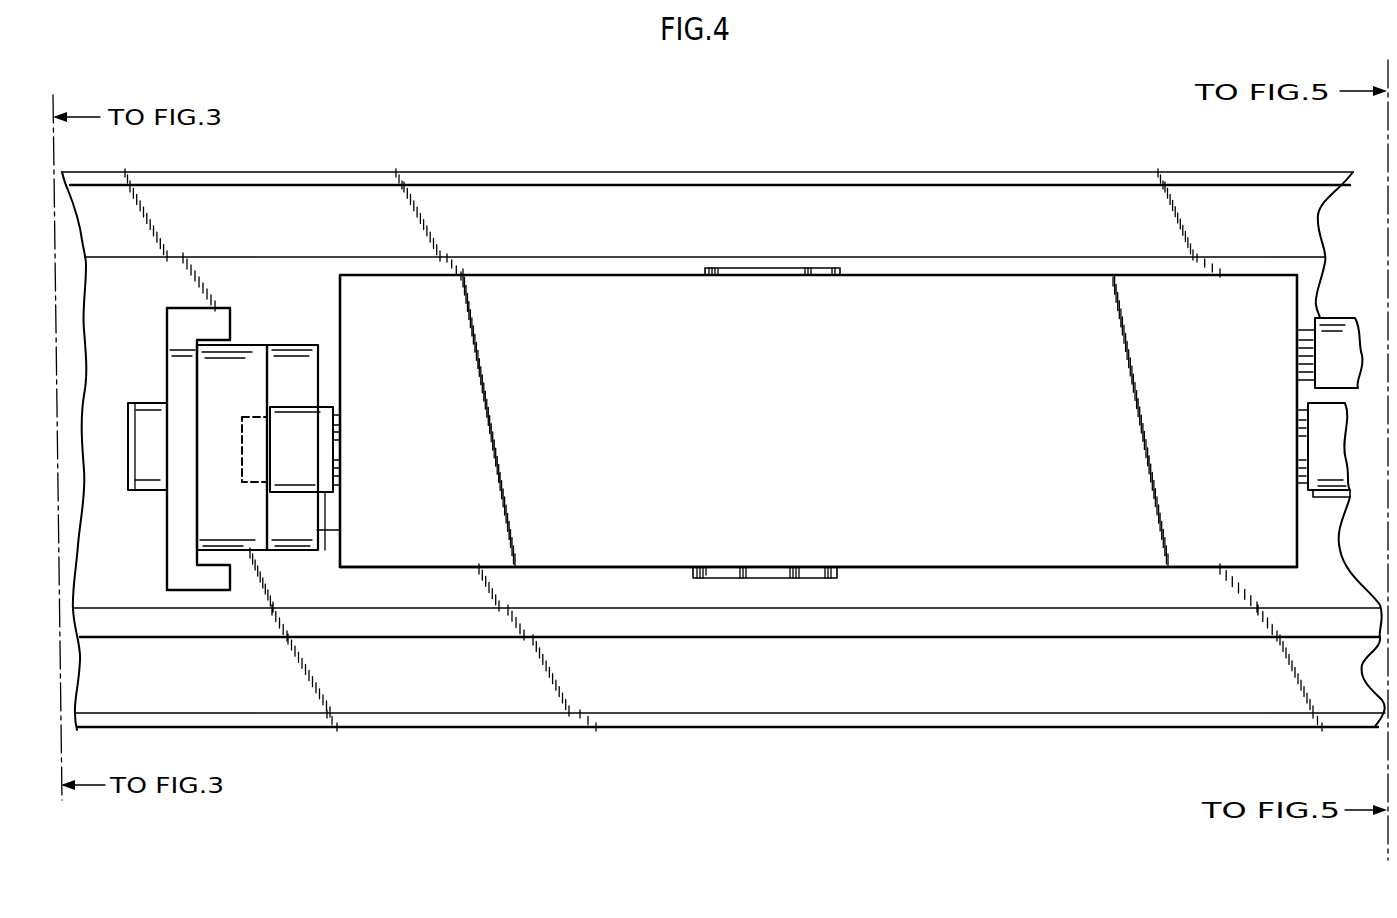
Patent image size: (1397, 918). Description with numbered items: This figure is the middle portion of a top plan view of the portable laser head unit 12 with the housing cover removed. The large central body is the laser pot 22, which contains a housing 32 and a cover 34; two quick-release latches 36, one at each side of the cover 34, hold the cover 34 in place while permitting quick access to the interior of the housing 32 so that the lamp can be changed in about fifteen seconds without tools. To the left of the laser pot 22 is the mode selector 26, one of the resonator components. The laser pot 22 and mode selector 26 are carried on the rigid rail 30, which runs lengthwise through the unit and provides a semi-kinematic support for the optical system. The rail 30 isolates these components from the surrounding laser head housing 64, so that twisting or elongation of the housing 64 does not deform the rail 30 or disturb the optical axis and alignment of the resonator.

The laser head unit 12 is at (928, 122).
The laser pot 22 is at (878, 250).
The mode selector 26 is at (217, 445).
The rail 30 is at (240, 637).
The housing 32 is at (1130, 567).
The cover 34 is at (885, 410).
The quick-release latches 36 is at (732, 270).
The laser head housing 64 is at (730, 727).